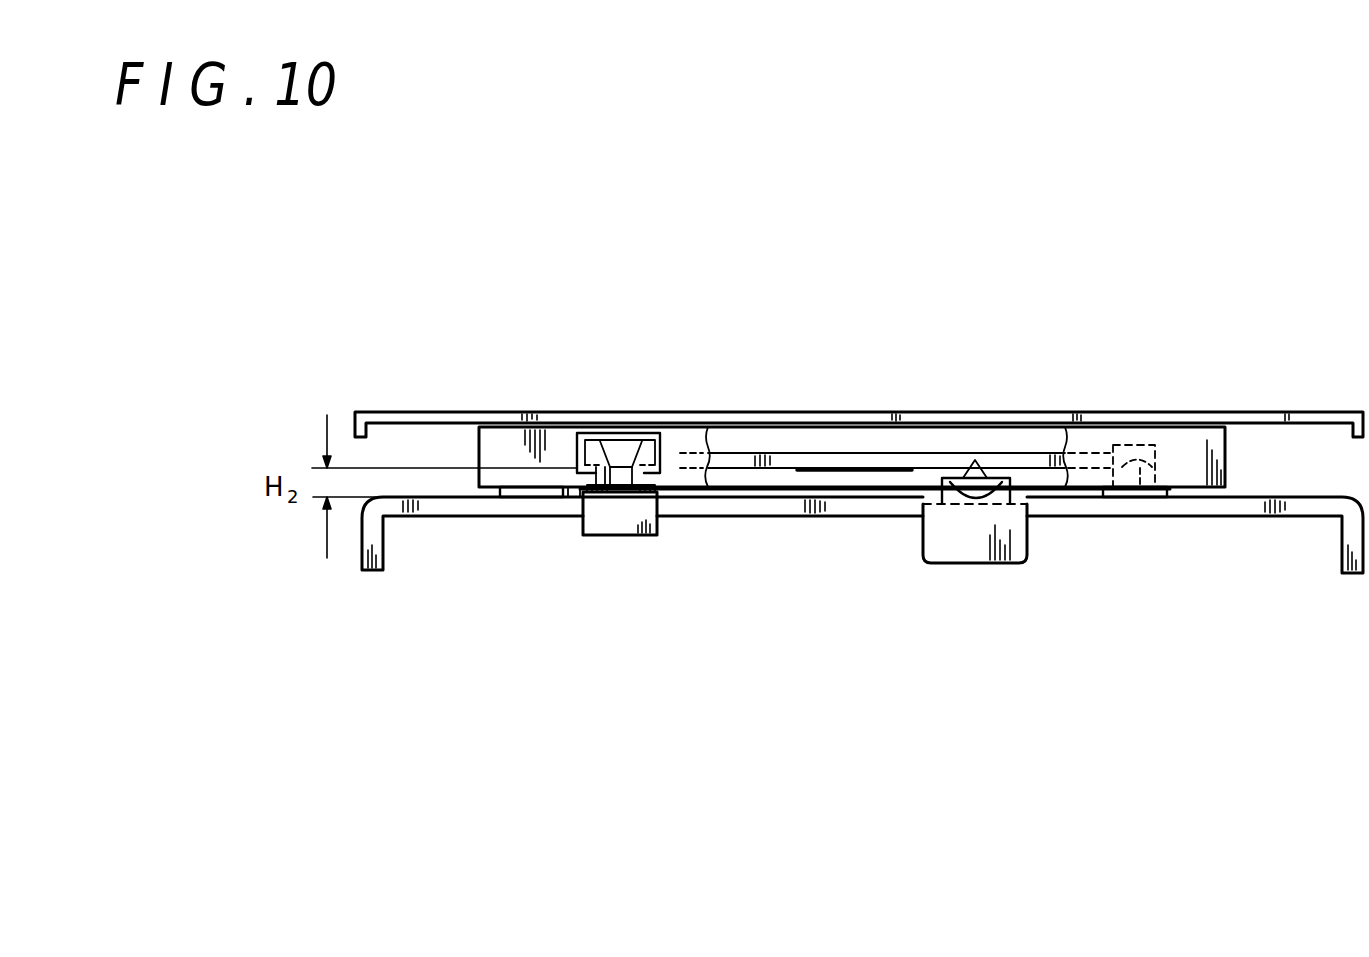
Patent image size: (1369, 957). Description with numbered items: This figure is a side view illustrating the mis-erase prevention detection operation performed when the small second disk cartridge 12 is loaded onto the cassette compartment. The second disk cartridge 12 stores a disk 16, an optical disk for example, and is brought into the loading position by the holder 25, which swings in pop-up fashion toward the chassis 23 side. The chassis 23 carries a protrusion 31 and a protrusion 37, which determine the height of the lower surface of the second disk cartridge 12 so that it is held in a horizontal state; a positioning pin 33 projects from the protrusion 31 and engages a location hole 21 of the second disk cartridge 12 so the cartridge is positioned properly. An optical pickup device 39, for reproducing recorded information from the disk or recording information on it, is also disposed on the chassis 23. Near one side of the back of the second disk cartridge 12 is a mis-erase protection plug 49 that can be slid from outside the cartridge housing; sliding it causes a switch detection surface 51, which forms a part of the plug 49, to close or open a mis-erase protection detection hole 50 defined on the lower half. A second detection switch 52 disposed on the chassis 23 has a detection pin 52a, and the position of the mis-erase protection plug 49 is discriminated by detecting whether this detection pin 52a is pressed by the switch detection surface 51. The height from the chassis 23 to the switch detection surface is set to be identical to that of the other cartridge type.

The second disk cartridge 12 is at (1172, 440).
The disk 16 is at (1028, 462).
The location hole 21 is at (1125, 445).
The chassis 23 is at (460, 507).
The holder 25 is at (934, 412).
The protrusion 31 is at (1143, 497).
The positioning pin 33 is at (1138, 445).
The protrusion 37 is at (535, 490).
The optical pickup device 39 is at (973, 492).
The mis-erase protection plug 49 is at (630, 452).
The mis-erase protection detection hole 50 is at (598, 490).
The switch detection surface 51 is at (655, 437).
The second detection switch 52 is at (627, 525).
The detection pin 52a is at (606, 466).